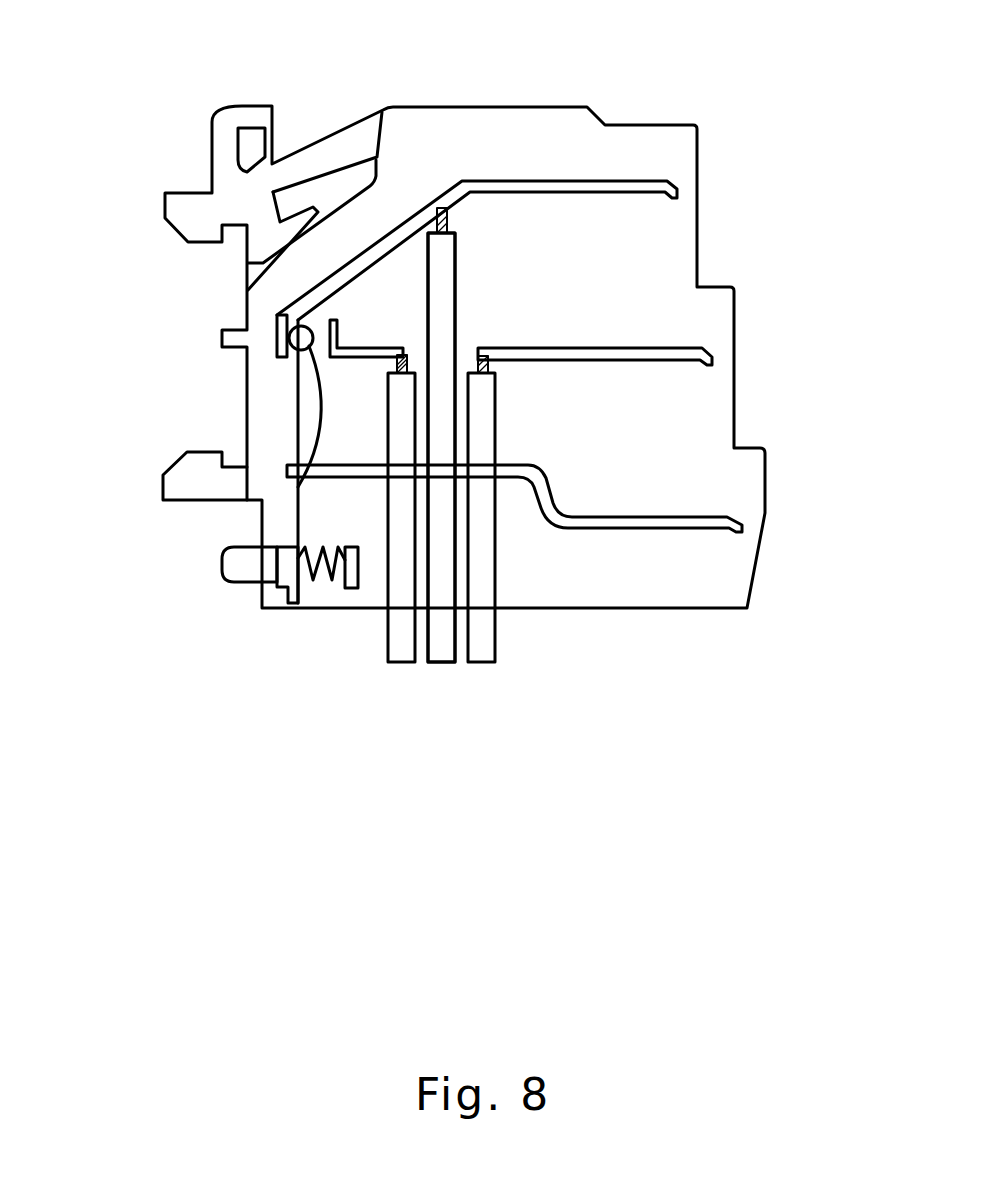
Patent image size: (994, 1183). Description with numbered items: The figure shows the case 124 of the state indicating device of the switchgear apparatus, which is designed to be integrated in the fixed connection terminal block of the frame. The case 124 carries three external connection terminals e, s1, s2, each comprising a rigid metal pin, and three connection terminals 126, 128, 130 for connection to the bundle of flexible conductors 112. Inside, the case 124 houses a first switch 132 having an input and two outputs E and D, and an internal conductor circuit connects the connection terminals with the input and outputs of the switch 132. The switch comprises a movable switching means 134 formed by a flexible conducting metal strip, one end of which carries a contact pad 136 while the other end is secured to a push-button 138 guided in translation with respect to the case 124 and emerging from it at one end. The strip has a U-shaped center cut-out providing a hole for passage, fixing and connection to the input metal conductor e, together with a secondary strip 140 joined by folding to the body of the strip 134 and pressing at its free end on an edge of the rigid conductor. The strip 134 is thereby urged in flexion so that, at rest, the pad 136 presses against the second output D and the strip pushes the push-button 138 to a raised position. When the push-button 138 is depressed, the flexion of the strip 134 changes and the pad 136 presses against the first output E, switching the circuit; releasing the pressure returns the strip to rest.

The bundle of flexible conductors 112 is at (442, 642).
The case 124 is at (662, 143).
The connection terminal 126 is at (443, 200).
The connection terminal 128 is at (483, 348).
The connection terminal 130 is at (402, 348).
The first switch 132 is at (201, 461).
The movable switching means 134 is at (300, 437).
The contact pad 136 is at (299, 316).
The push-button 138 is at (240, 566).
The secondary strip 140 is at (315, 390).
The second output D is at (278, 334).
The first output E is at (335, 316).
The external connection terminal s1 is at (657, 362).
The external connection terminal s2 is at (637, 194).
The external connection terminal e is at (678, 530).